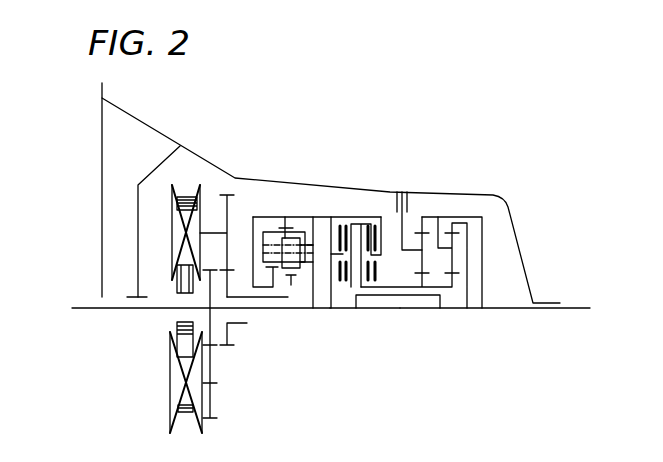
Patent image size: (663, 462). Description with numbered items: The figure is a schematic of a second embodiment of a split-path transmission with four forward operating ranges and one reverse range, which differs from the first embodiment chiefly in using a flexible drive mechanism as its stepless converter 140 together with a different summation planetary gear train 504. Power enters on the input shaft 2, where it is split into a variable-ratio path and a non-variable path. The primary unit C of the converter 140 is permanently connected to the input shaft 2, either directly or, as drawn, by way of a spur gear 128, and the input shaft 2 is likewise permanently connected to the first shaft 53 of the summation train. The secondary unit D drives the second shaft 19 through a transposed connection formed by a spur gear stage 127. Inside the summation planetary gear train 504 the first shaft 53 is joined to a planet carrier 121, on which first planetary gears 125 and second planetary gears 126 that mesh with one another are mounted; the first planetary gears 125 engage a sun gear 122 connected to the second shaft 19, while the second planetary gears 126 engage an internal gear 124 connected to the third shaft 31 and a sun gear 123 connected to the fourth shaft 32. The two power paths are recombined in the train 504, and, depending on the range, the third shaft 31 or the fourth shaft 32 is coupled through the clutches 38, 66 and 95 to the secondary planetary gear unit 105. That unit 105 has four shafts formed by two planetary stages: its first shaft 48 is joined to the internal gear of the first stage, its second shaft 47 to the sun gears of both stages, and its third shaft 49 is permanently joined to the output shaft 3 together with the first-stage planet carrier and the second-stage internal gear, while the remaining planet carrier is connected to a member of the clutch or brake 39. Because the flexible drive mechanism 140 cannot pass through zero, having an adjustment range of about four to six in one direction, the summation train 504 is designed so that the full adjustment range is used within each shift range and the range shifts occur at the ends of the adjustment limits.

The input shaft 2 is at (78, 308).
The output shaft 3 is at (572, 308).
The second shaft 19 is at (266, 298).
The third shaft 31 is at (363, 217).
The fourth shaft 32 is at (327, 222).
The clutch 38 is at (373, 285).
The clutch or brake 39 is at (410, 193).
The second shaft 47 is at (405, 289).
The first shaft 48 is at (437, 297).
The third shaft 49 is at (455, 312).
The first shaft 53 is at (283, 290).
The clutch 66 is at (341, 284).
The clutch 95 is at (371, 330).
The secondary planetary gear unit 105 is at (473, 172).
The planet carrier 121 is at (318, 290).
The sun gear 122 is at (302, 290).
The sun gear 123 is at (280, 290).
The internal gear 124 is at (293, 223).
The first planetary gears 125 is at (285, 227).
The second planetary gears 126 is at (273, 223).
The spur gear stage 127 is at (226, 276).
The spur gear 128 is at (212, 368).
The stepless converter 140 is at (155, 330).
The summation planetary gear train 504 is at (307, 165).
The primary unit C is at (176, 378).
The secondary unit D is at (175, 240).